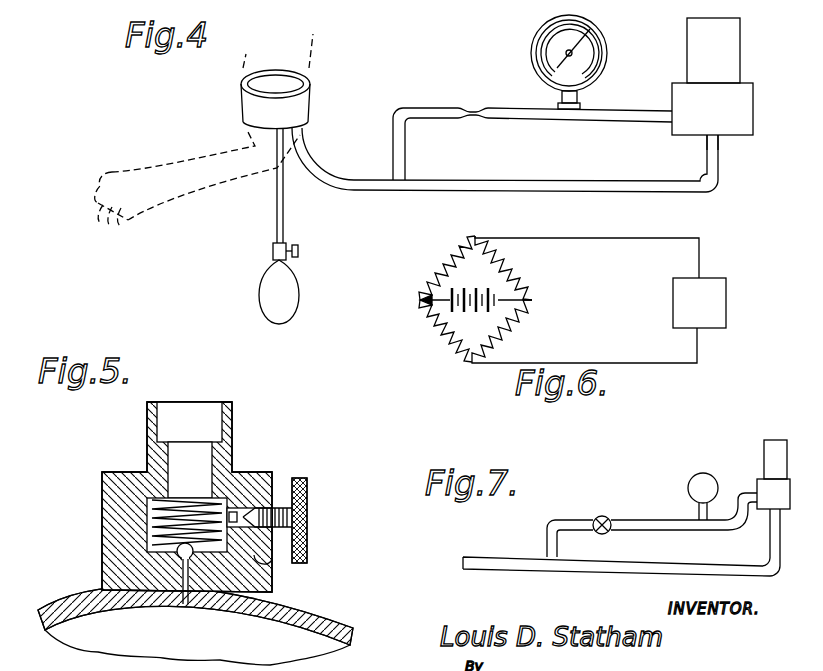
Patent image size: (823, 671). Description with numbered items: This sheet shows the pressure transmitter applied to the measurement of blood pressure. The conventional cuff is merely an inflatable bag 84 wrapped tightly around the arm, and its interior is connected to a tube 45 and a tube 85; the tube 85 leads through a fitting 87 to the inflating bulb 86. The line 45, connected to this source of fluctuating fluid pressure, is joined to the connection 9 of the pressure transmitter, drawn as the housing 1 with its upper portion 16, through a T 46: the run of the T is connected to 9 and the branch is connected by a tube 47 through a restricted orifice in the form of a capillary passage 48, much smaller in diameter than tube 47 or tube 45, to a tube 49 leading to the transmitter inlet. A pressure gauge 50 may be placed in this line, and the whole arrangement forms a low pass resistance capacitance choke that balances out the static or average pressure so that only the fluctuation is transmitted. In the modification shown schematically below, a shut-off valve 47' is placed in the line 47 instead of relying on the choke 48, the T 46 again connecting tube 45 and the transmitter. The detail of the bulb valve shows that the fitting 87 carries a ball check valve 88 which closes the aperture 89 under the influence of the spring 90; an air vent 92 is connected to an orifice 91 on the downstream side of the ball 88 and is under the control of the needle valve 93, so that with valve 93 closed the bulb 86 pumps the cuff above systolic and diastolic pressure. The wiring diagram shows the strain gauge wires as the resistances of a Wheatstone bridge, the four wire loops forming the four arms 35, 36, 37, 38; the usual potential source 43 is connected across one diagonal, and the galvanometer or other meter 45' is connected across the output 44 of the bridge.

In FIG. 4, the inflatable bag 84 is at (243, 90).
In FIG. 4, the tube 85 is at (277, 203).
In FIG. 5, the tube 85 is at (147, 423).
In FIG. 4, the tube 45 is at (505, 160).
In FIG. 7, the tube 45 is at (619, 542).
In FIG. 4, the pressure gauge 50 is at (543, 28).
In FIG. 7, the pressure gauge 50 is at (710, 470).
In FIG. 4, the capillary passage 48 is at (478, 80).
In FIG. 4, the tube 47 is at (425, 144).
In FIG. 7, the tube 47 is at (549, 538).
In FIG. 4, the tube 49 is at (612, 118).
In FIG. 4, the housing upper portion 16 is at (687, 47).
In FIG. 7, the housing upper portion 16 is at (764, 450).
In FIG. 4, the pressure transducer housing 1 is at (672, 90).
In FIG. 7, the pressure transducer housing 1 is at (757, 489).
In FIG. 4, the pressure transmitter connection 9 is at (719, 142).
In FIG. 4, the fitting 87 is at (273, 251).
In FIG. 5, the fitting 87 is at (102, 508).
In FIG. 4, the inflating bulb 86 is at (262, 290).
In FIG. 5, the inflating bulb 86 is at (53, 610).
In FIG. 6, the bridge resistance arm 37 is at (454, 254).
In FIG. 6, the bridge resistance arm 35 is at (530, 262).
In FIG. 6, the bridge resistance arm 38 is at (426, 316).
In FIG. 6, the bridge resistance arm 36 is at (527, 316).
In FIG. 6, the potential source 43 is at (421, 298).
In FIG. 6, the output 44 is at (634, 240).
In FIG. 6, the galvanometer 45' is at (722, 303).
In FIG. 5, the spring 90 is at (190, 498).
In FIG. 5, the orifice 91 is at (234, 508).
In FIG. 5, the needle valve 93 is at (282, 500).
In FIG. 5, the ball check valve 88 is at (170, 551).
In FIG. 5, the air vent 92 is at (272, 584).
In FIG. 5, the aperture 89 is at (188, 606).
In FIG. 7, the shut-off valve 47' is at (615, 510).
In FIG. 7, the T 46 is at (641, 530).